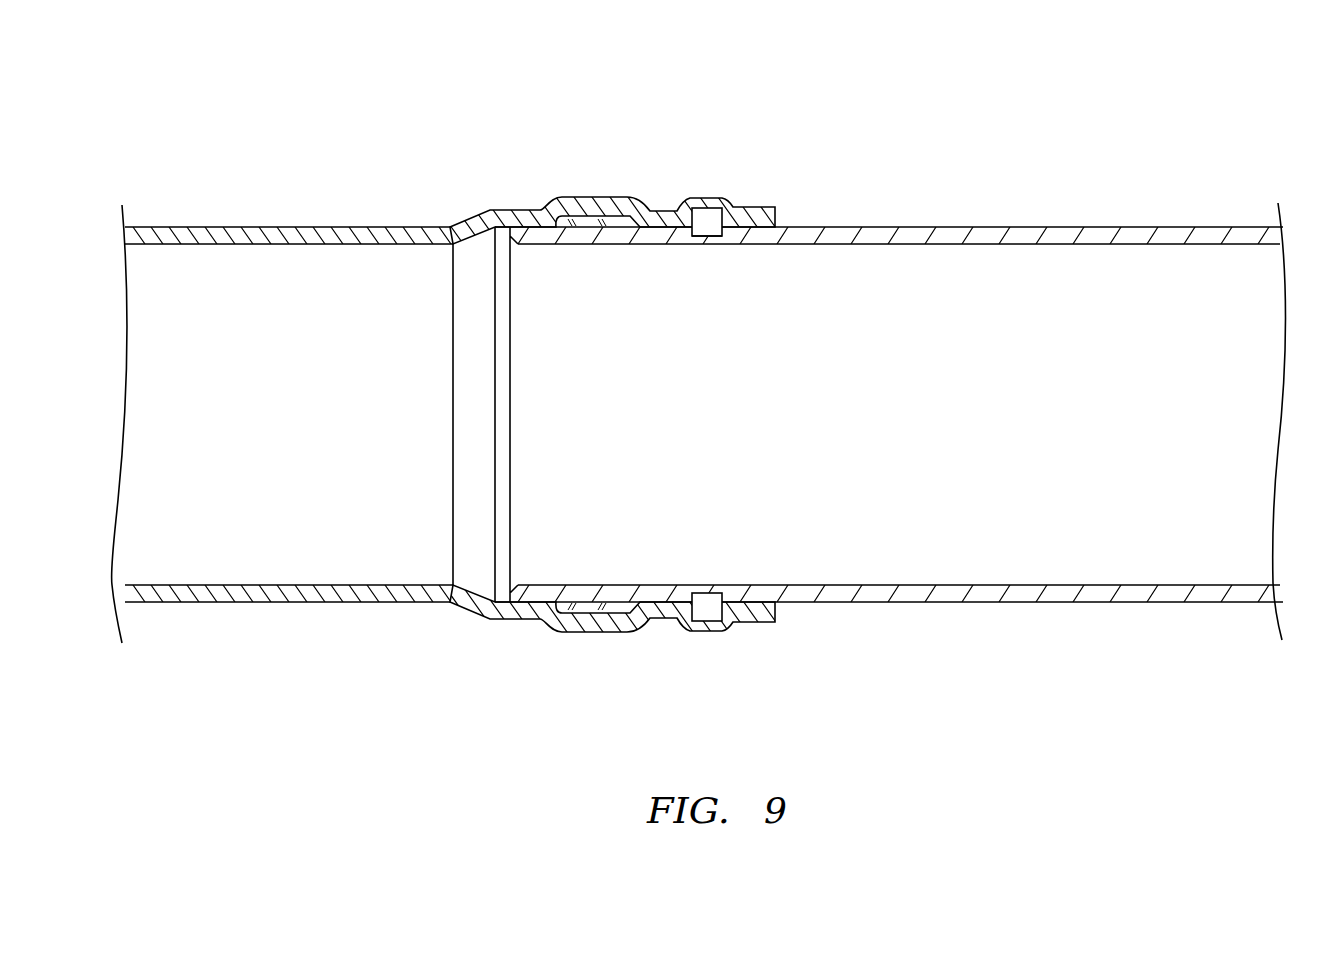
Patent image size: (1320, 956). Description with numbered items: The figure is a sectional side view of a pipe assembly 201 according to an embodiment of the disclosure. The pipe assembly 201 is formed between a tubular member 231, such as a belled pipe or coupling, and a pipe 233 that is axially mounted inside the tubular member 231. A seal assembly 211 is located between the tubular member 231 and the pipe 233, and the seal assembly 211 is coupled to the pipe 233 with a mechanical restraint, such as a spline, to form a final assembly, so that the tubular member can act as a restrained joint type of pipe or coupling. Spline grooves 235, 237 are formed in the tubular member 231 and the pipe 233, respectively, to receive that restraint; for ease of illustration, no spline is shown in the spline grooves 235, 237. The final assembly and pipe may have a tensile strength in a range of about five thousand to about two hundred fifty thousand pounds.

The pipe assembly 201 is at (698, 345).
The seal assembly 211 is at (583, 217).
The tubular member 231 is at (287, 236).
The pipe 233 is at (990, 236).
The spline groove 235 is at (703, 207).
The spline groove 237 is at (715, 240).